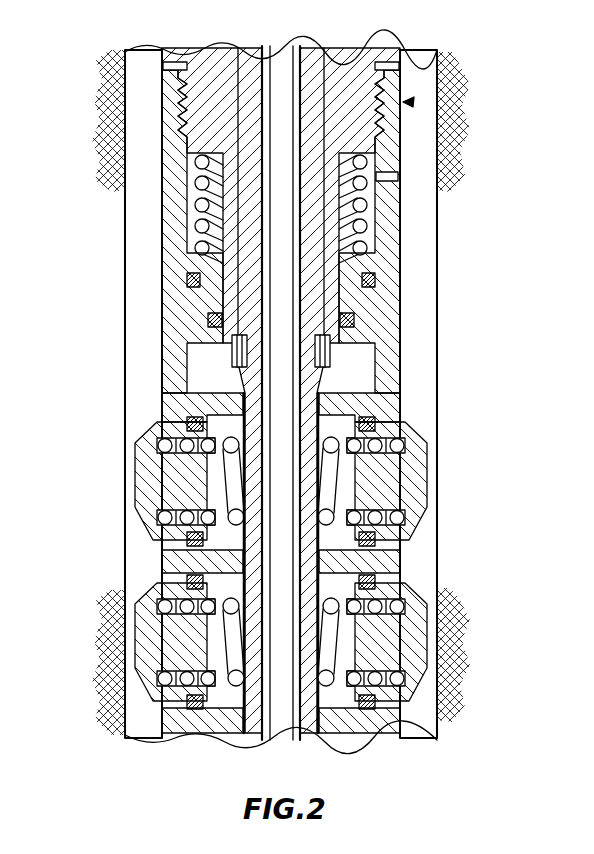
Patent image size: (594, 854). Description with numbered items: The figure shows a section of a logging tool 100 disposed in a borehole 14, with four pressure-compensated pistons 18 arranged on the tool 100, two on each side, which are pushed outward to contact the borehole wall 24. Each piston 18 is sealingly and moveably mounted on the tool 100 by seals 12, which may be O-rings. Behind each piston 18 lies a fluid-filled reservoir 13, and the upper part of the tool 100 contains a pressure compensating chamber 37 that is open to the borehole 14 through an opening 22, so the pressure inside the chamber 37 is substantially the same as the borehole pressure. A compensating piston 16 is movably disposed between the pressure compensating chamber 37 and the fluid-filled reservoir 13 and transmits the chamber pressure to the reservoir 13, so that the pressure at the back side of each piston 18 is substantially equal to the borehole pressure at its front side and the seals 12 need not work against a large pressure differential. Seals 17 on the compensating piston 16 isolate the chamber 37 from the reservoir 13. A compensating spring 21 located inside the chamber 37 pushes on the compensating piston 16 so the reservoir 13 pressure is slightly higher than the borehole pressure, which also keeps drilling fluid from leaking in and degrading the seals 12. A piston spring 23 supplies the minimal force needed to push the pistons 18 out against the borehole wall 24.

The tool 100 is at (407, 103).
The borehole 14 is at (418, 159).
The borehole wall 24 is at (430, 125).
The opening 22 is at (400, 183).
The compensating spring 21 is at (373, 227).
The compensating piston 16 is at (378, 268).
The pressure compensating chamber 37 is at (205, 240).
The seals 17 is at (212, 320).
The seals 12 is at (185, 538).
The fluid-filled reservoir 13 is at (338, 488).
The pistons 18 is at (440, 611).
The piston spring 23 is at (395, 670).